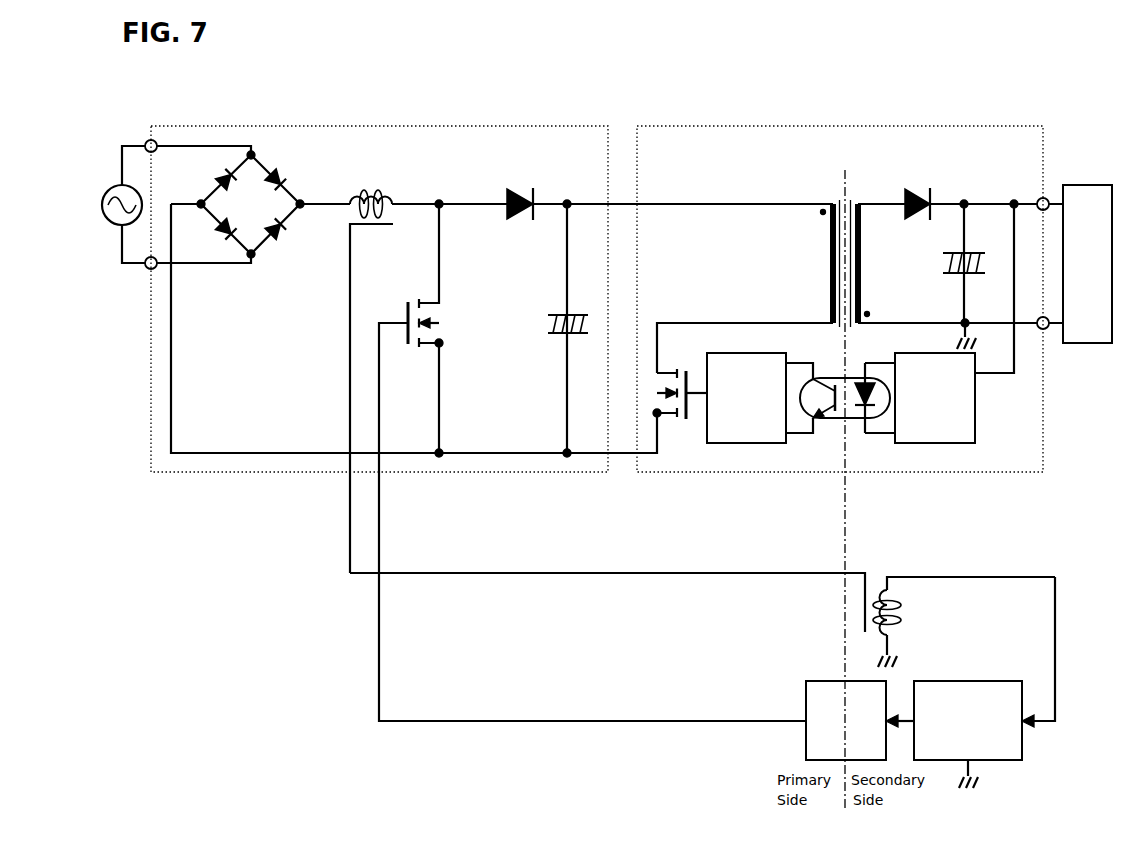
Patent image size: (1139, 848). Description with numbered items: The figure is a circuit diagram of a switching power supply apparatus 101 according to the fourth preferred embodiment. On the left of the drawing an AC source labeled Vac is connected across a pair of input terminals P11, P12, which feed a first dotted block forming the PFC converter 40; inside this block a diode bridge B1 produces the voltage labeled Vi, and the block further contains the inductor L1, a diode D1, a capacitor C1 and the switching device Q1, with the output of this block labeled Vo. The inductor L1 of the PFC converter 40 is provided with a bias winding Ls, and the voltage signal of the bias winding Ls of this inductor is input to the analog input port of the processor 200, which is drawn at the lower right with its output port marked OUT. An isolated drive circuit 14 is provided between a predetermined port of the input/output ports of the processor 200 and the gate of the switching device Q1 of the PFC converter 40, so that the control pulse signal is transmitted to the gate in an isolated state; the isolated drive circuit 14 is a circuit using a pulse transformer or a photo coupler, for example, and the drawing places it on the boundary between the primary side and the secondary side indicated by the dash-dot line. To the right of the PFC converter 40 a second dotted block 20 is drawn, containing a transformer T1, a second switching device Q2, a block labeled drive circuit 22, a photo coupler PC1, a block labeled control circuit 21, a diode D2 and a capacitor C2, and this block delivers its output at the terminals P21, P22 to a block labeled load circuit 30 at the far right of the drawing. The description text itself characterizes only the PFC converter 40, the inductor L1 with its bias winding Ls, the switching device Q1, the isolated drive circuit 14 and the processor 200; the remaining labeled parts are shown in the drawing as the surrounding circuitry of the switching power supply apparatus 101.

The switching power supply apparatus 101 is at (998, 90).
The PFC converter 40 is at (393, 125).
The isolated DC-DC converter circuit 20 is at (936, 125).
The load circuit 30 is at (1108, 185).
The isolated drive circuit 14 is at (820, 678).
The processor 200 is at (990, 680).
The control circuit 21 is at (956, 444).
The drive circuit 22 is at (780, 444).
The first input terminal P11 is at (148, 141).
The second input terminal P12 is at (148, 269).
The first output terminal P21 is at (1047, 198).
The second output terminal P22 is at (1046, 330).
The diode bridge rectifier B1 is at (230, 204).
The inductor L1 is at (394, 367).
The switching device Q1 is at (592, 460).
The diode D1 is at (503, 193).
The smoothing capacitor C1 is at (573, 328).
The transformer T1 is at (858, 198).
The switching element Q2 is at (680, 382).
The rectifier diode D2 is at (971, 195).
The output smoothing capacitor C2 is at (980, 274).
The photocoupler PC1 is at (855, 378).
The bias winding Ls is at (702, 620).
The AC input voltage source Vac is at (114, 204).
The input voltage Vi is at (325, 195).
The output voltage Vo is at (700, 195).